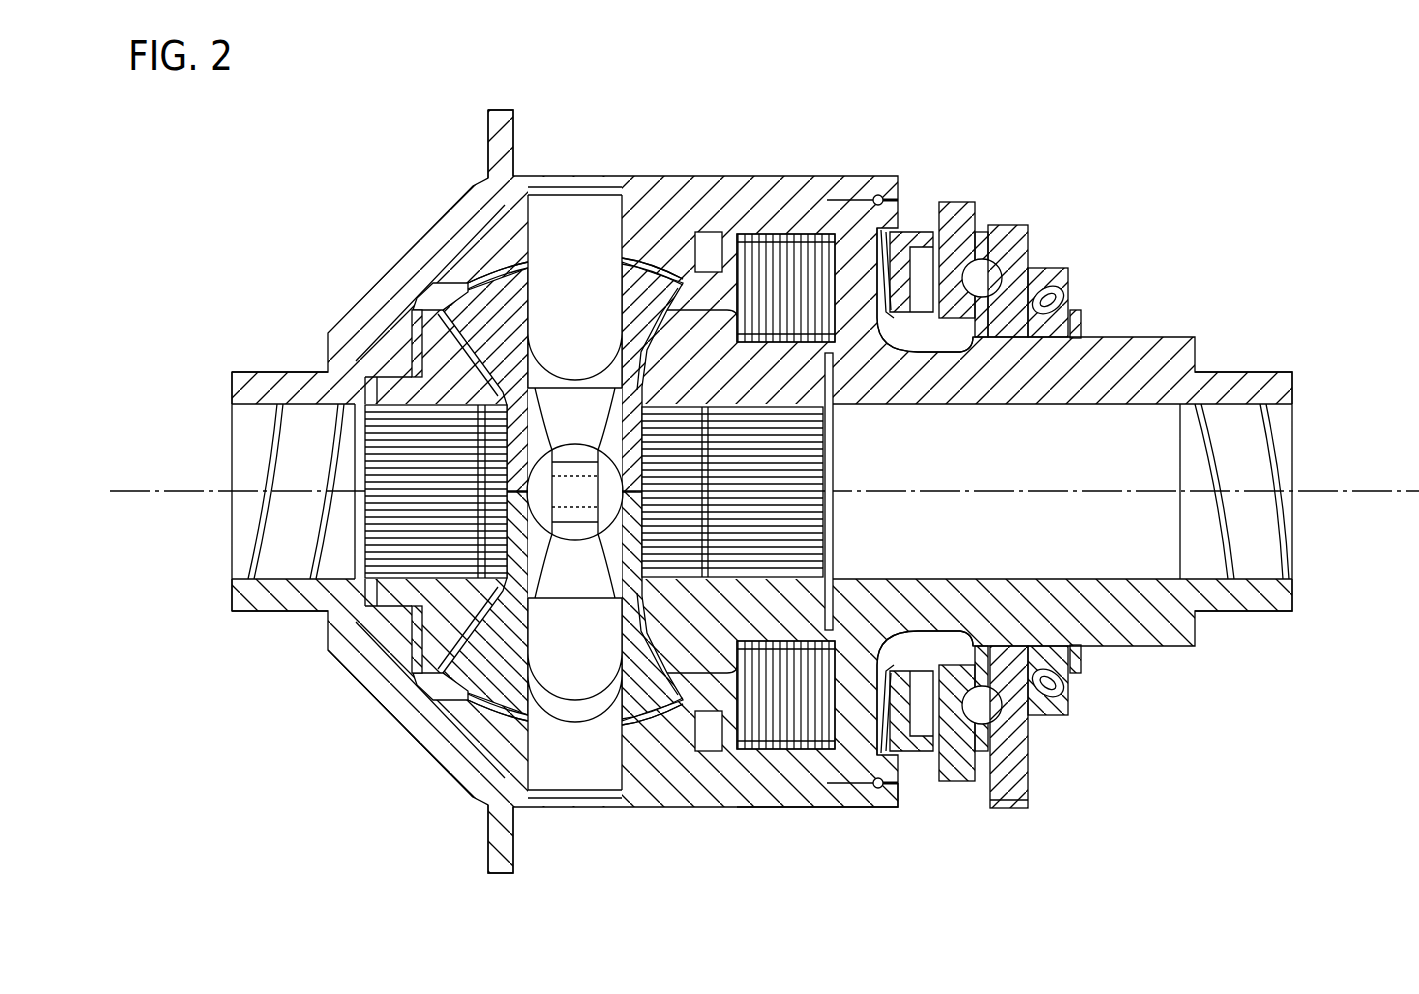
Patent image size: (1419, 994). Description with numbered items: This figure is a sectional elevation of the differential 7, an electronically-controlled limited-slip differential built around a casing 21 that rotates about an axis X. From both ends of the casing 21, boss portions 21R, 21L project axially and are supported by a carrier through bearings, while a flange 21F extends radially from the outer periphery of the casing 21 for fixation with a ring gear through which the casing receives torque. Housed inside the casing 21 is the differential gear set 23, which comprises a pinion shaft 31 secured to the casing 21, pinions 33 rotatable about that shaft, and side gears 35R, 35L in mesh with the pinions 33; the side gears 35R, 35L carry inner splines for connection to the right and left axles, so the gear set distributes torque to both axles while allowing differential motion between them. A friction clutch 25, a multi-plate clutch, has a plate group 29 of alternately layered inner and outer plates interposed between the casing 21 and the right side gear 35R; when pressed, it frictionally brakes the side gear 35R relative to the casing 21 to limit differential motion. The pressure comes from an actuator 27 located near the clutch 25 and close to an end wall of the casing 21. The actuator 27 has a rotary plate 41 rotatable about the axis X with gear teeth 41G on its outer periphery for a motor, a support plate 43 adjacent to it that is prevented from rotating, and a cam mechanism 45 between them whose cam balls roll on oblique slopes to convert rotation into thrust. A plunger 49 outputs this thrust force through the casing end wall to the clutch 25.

The differential 7 is at (748, 112).
The casing 21 is at (662, 176).
The flange 21F is at (496, 110).
The boss portion 21L is at (256, 372).
The boss portion 21R is at (1240, 372).
The differential gear set 23 is at (568, 822).
The friction clutch 25 is at (756, 822).
The actuator 27 is at (926, 802).
The plate group 29 is at (775, 750).
The pinion shaft 31 is at (592, 176).
The pinions 33 is at (487, 295).
The side gear 35L is at (362, 435).
The side gear 35R is at (818, 446).
The rotary plate 41 is at (1010, 225).
The gear teeth 41G is at (1008, 808).
The support plate 43 is at (950, 202).
The cam mechanism 45 is at (984, 232).
The plunger 49 is at (916, 232).
The axis X is at (1362, 491).